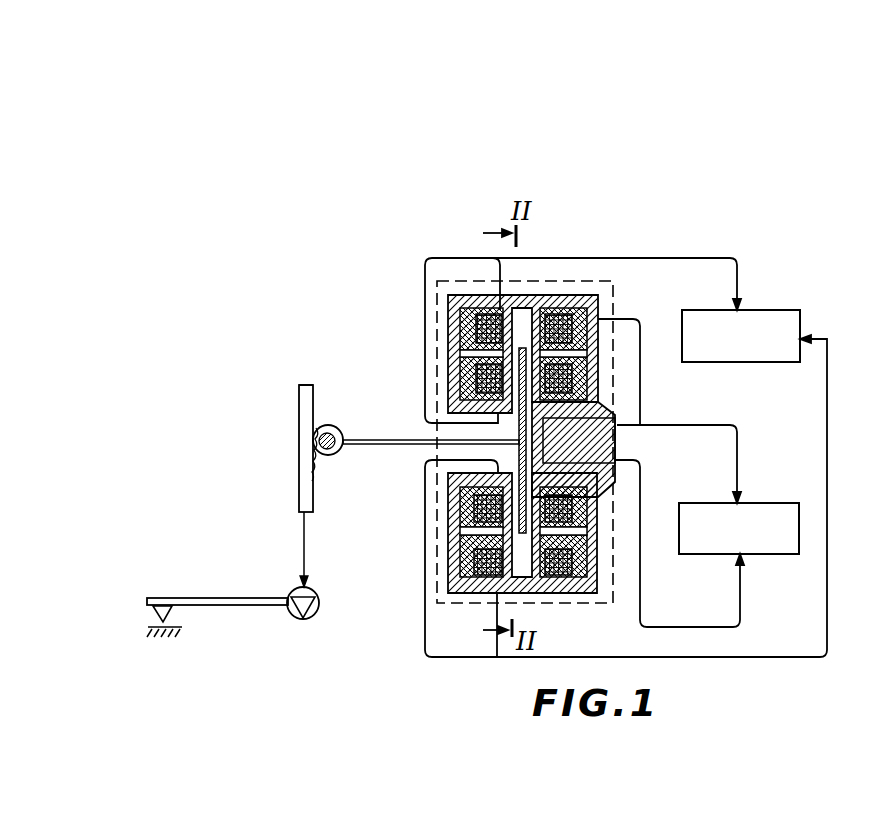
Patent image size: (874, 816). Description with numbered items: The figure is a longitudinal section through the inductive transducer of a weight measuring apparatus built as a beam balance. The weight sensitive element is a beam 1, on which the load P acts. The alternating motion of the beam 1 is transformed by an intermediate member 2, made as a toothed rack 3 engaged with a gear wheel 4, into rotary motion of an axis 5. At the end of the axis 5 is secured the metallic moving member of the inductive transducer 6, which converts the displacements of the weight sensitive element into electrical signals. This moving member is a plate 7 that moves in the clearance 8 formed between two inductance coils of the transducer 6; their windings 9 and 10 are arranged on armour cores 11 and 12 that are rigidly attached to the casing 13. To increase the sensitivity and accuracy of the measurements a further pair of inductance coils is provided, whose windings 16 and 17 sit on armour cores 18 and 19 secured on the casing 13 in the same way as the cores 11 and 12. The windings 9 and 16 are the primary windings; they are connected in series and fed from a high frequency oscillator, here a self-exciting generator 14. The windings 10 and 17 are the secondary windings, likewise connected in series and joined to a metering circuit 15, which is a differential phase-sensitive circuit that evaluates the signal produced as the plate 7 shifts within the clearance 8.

The beam 1 is at (240, 597).
The intermediate member 2 is at (295, 373).
The toothed rack 3 is at (302, 493).
The gear wheel 4 is at (331, 455).
The axis 5 is at (375, 440).
The inductive transducer 6 is at (437, 385).
The plate 7 is at (515, 534).
The clearance 8 is at (520, 323).
The winding 9 is at (477, 318).
The winding 10 is at (585, 386).
The armour core 11 is at (460, 337).
The armour core 12 is at (528, 344).
The casing 13 is at (615, 442).
The self-exciting generator 14 is at (741, 336).
The metering circuit 15 is at (739, 528).
The winding 16 is at (470, 557).
The winding 17 is at (590, 552).
The armour core 18 is at (470, 573).
The armour core 19 is at (585, 578).
The force P is at (308, 565).